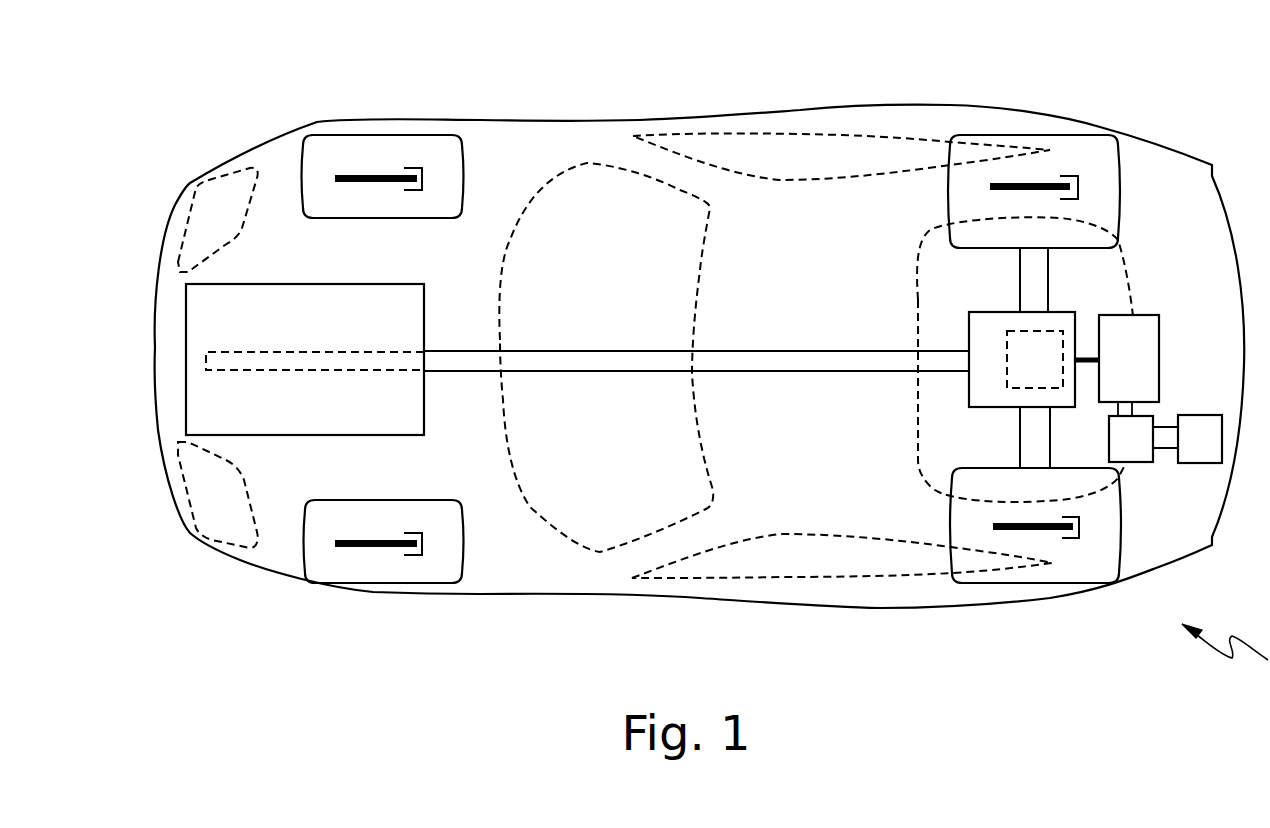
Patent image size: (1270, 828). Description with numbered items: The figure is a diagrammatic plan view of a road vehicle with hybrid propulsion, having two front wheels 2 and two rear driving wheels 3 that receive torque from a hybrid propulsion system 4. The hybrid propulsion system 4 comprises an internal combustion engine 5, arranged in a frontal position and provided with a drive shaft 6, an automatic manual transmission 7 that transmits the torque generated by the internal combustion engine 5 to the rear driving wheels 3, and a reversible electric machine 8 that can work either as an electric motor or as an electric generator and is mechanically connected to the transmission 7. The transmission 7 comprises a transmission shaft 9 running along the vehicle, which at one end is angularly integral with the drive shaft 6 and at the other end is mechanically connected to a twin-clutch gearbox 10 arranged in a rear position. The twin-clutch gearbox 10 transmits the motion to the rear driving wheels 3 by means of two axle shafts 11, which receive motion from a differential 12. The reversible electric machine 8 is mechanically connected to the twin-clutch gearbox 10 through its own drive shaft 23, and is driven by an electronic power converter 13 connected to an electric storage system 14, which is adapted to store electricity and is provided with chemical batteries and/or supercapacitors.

The front wheels 2 is at (327, 153).
The rear driving wheels 3 is at (1104, 150).
The hybrid propulsion system 4 is at (228, 138).
The internal combustion engine 5 is at (193, 308).
The drive shaft 6 is at (292, 357).
The automatic manual transmission 7 is at (724, 92).
The reversible electric machine 8 is at (1129, 365).
The transmission shaft 9 is at (745, 362).
The twin-clutch gearbox 10 is at (982, 392).
The axle shafts 11 is at (1030, 272).
The differential 12 is at (1035, 359).
The electronic power converter 13 is at (1143, 439).
The electric storage system 14 is at (1200, 439).
The drive shaft 23 is at (1087, 355).